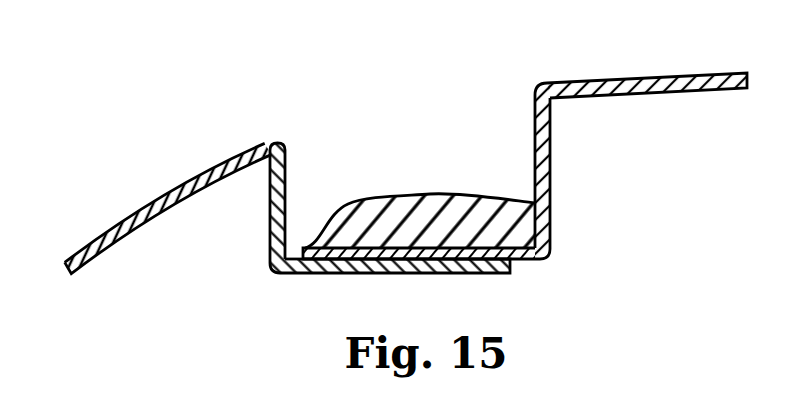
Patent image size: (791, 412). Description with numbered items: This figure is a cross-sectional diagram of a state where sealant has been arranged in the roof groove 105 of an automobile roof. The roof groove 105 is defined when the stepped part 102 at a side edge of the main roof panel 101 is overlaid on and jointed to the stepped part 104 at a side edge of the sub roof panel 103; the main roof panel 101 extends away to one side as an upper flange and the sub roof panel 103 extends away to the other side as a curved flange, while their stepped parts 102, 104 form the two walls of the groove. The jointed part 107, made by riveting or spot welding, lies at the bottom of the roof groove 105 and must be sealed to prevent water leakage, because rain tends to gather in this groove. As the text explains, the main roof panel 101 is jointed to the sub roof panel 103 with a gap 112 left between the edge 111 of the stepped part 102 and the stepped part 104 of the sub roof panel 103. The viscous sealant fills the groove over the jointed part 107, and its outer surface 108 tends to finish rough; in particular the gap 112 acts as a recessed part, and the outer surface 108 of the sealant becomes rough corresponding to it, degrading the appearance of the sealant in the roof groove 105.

The main roof panel 101 is at (698, 74).
The stepped part 102 is at (550, 187).
The sub roof panel 103 is at (148, 201).
The stepped part 104 is at (281, 230).
The roof groove 105 is at (357, 152).
The jointed part 107 is at (419, 274).
The outer surface 108 is at (460, 194).
The edge 111 is at (298, 246).
The gap 112 is at (293, 252).